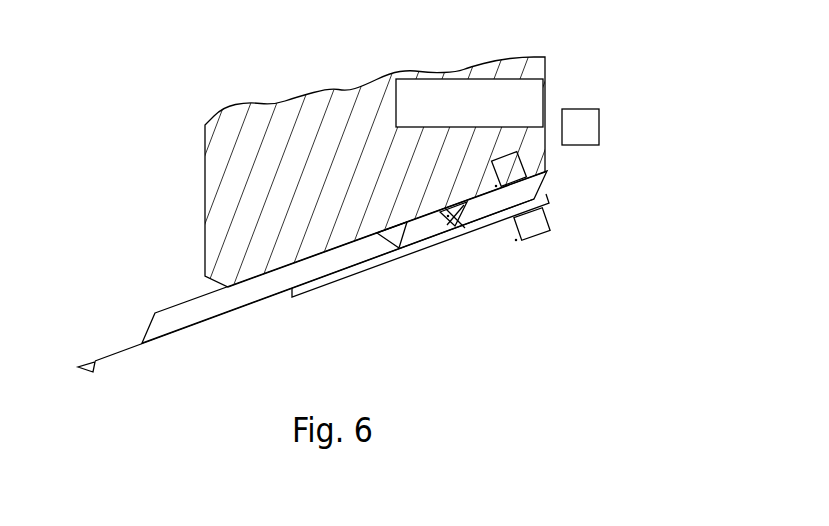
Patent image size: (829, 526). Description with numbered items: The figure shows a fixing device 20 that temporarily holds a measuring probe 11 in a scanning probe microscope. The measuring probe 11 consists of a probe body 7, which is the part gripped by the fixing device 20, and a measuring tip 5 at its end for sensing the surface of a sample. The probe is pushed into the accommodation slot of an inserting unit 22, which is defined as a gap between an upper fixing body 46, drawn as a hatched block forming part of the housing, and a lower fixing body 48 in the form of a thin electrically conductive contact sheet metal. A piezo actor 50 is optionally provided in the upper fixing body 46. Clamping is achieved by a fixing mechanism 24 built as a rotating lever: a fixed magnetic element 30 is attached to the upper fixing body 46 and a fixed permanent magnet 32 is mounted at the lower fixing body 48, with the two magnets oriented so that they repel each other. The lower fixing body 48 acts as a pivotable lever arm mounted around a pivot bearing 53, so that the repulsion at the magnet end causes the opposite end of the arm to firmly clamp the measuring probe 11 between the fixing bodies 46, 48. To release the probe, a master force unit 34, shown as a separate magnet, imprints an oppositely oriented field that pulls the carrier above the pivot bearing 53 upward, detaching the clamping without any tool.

The fixing device 20 is at (552, 38).
The upper fixing body 46 is at (218, 163).
The piezo actor 50 is at (445, 100).
The master force unit 34 is at (594, 112).
The magnetic element 30 is at (523, 163).
The permanent magnet 32 is at (546, 215).
The measuring probe 11 is at (133, 316).
The inserting unit 22 is at (256, 268).
The lower fixing body 48 is at (364, 270).
The probe body 7 is at (192, 325).
The measuring tip 5 is at (97, 372).
The pivot bearing 53 is at (447, 213).
The fixing mechanism 24 is at (496, 186).